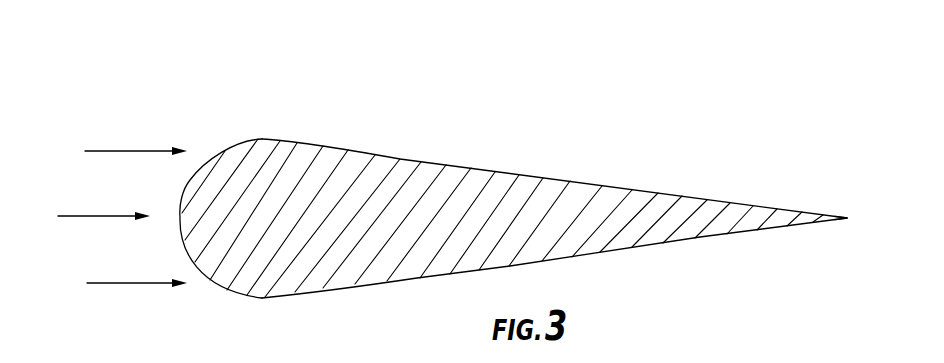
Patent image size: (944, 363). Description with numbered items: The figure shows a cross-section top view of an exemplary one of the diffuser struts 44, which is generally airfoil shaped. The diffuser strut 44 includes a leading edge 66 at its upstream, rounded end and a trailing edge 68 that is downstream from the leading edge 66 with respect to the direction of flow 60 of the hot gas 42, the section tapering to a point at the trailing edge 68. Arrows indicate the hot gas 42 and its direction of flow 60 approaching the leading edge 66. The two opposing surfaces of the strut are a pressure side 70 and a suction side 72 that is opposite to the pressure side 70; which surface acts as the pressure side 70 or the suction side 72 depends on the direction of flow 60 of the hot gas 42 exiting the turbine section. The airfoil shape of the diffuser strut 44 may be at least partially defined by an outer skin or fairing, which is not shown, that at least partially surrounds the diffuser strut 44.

The hot gas 42 is at (138, 151).
The diffuser strut 44 is at (485, 188).
The direction of flow 60 is at (110, 216).
The leading edge 66 is at (181, 215).
The trailing edge 68 is at (852, 217).
The pressure side 70 is at (420, 280).
The suction side 72 is at (400, 159).